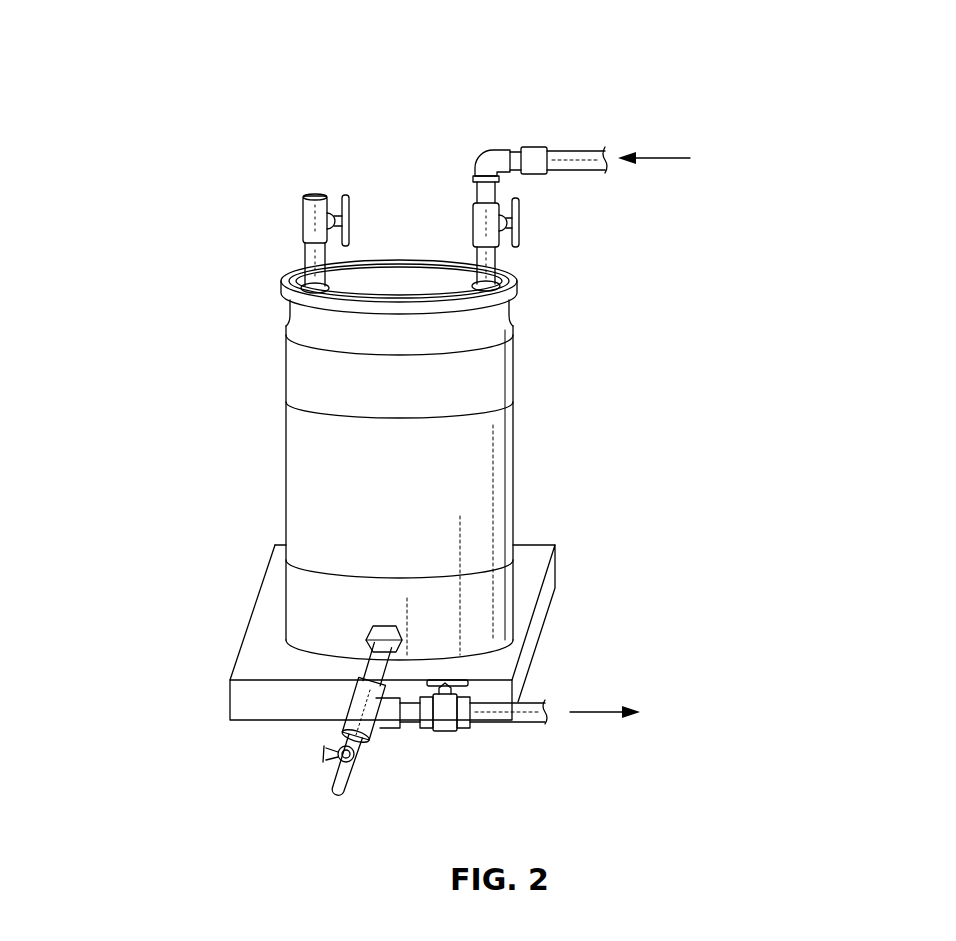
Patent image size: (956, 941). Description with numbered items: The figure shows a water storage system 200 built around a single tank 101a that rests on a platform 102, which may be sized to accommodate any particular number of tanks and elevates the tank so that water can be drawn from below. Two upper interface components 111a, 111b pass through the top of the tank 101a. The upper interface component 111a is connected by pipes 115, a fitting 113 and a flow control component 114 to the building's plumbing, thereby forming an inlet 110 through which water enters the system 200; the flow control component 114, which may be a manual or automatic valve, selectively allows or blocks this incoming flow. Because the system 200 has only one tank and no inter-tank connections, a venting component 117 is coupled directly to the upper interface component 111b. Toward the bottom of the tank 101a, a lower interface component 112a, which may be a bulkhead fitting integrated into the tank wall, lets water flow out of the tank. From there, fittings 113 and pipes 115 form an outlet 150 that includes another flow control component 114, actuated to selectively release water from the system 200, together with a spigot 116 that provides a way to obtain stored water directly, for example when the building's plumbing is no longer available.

The water storage system 200 is at (126, 76).
The inlet 110 is at (547, 41).
The outlet 150 is at (537, 785).
The tank 101a is at (285, 458).
The platform 102 is at (248, 622).
The upper interface component 111a is at (504, 286).
The upper interface component 111b is at (332, 284).
The lower interface component 112a is at (383, 626).
The fitting 113 is at (492, 147).
The flow control component 114 is at (519, 219).
The pipe 115 is at (575, 150).
The spigot 116 is at (323, 783).
The venting component 117 is at (303, 215).